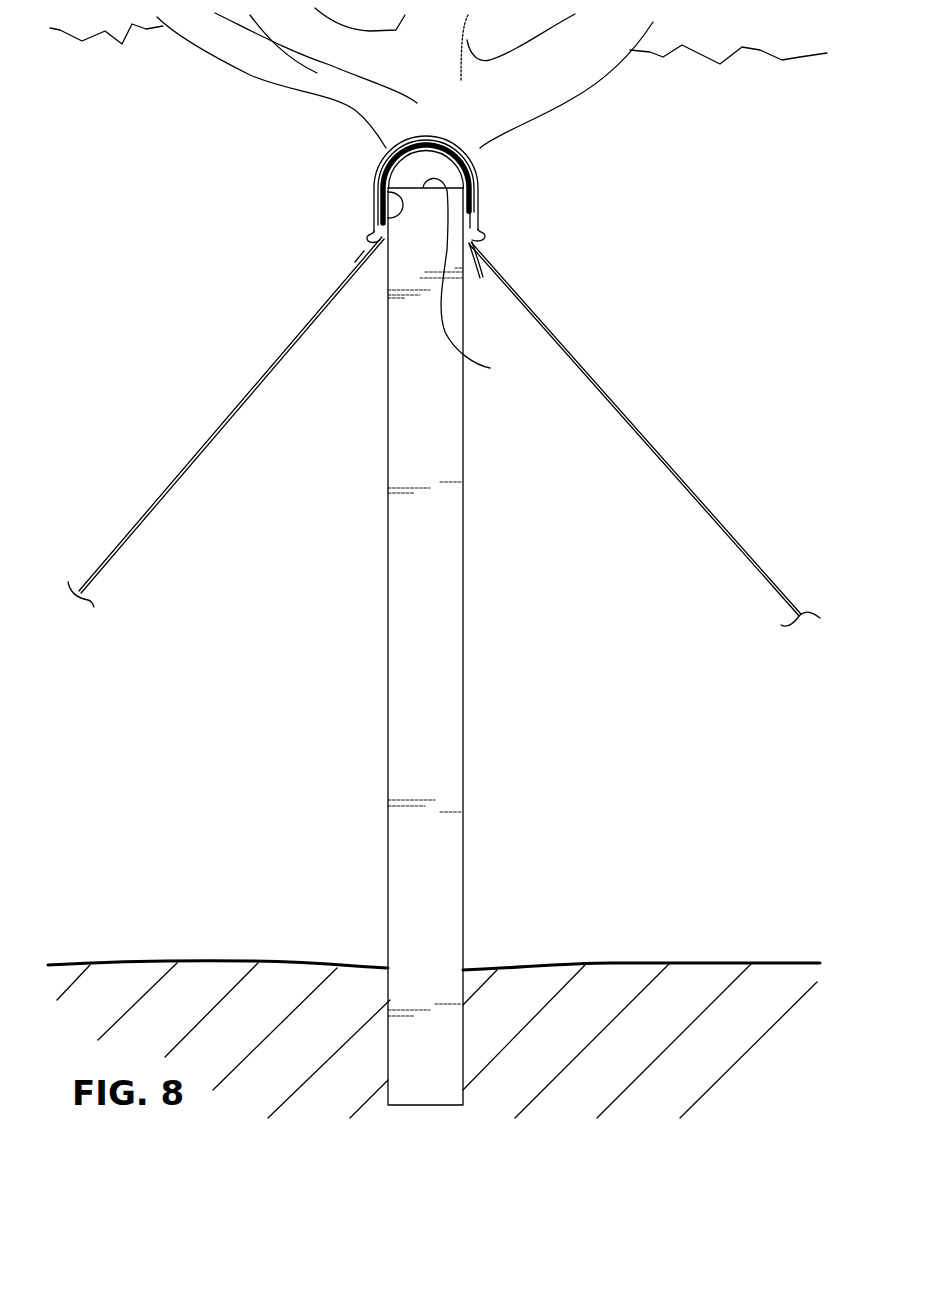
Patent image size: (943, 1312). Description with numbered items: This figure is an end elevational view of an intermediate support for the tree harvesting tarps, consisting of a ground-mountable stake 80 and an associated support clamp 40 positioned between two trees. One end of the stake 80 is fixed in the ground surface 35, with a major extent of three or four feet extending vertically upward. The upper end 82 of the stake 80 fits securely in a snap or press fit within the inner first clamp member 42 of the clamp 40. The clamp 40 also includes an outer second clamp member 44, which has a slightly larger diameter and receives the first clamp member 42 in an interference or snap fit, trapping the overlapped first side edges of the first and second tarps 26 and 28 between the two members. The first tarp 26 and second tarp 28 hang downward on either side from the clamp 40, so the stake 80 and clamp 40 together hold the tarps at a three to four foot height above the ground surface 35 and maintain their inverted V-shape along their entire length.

The clamp 40 is at (375, 173).
The first clamp member 42 is at (388, 217).
The second clamp member 44 is at (474, 166).
The stake 80 is at (422, 693).
The upper end 82 is at (470, 279).
The first tarp 26 is at (208, 440).
The second tarp 28 is at (642, 428).
The ground surface 35 is at (615, 963).